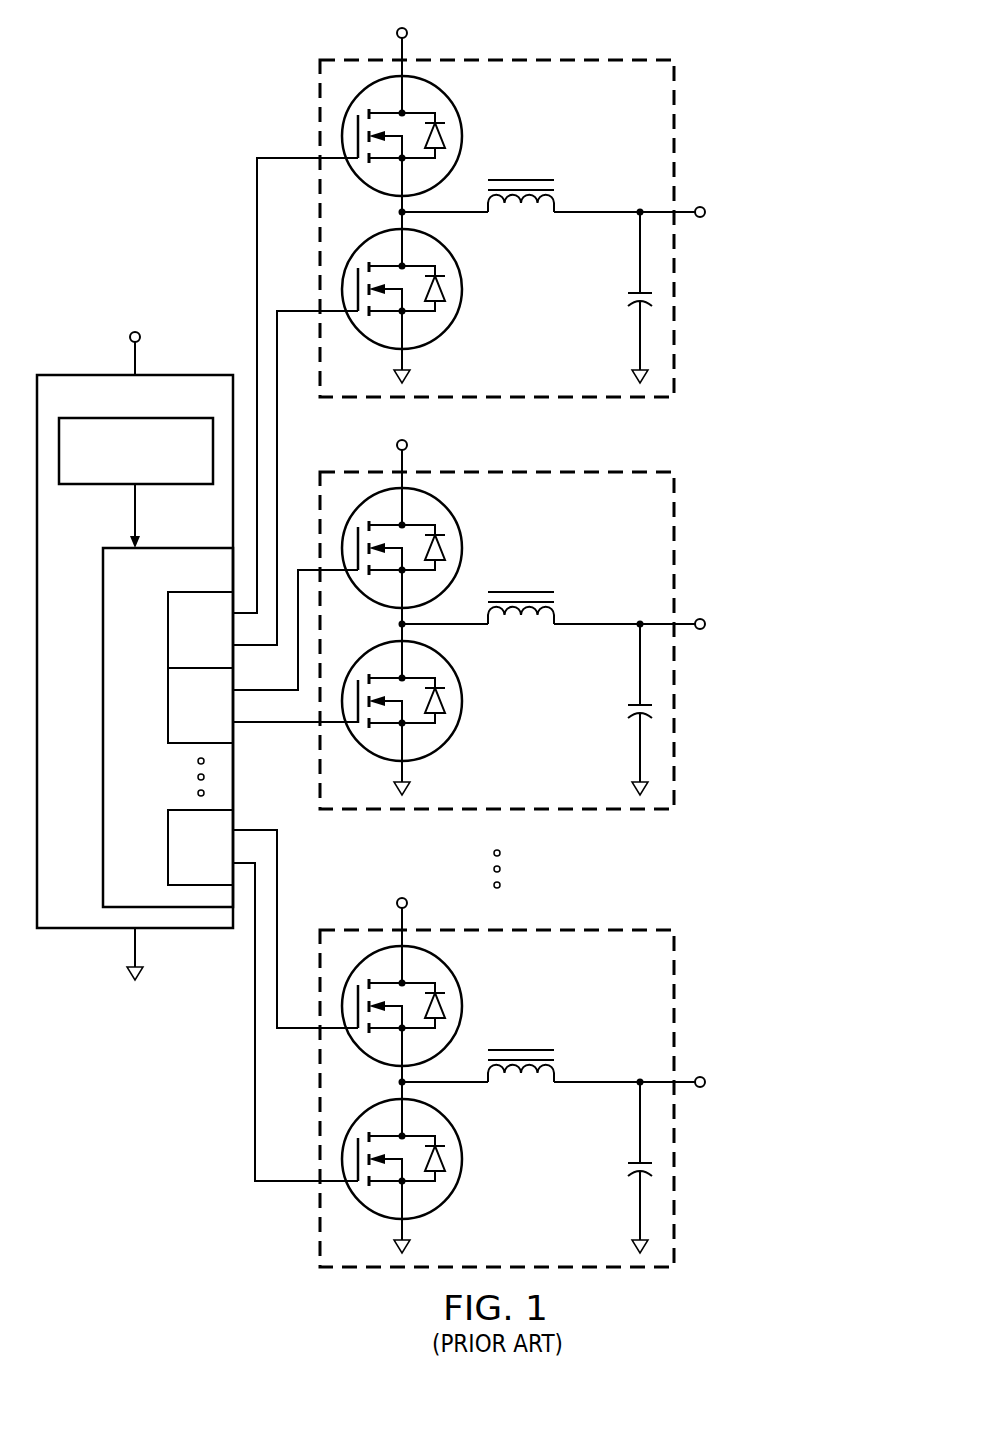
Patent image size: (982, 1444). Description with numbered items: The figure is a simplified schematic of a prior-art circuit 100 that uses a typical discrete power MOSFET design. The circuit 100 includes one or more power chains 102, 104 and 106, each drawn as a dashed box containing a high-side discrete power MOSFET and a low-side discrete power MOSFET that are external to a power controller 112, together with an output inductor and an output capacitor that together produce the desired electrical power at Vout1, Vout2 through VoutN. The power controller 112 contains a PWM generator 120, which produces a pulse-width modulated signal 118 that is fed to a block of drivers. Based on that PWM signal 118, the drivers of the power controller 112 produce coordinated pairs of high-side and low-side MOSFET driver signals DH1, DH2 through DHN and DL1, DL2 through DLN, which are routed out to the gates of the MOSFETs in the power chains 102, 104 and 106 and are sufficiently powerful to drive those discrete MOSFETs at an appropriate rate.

The circuit 100 is at (120, 50).
The power chain 102 is at (541, 199).
The power chain 104 is at (541, 611).
The power chain 106 is at (542, 1069).
The power controller 112 is at (74, 362).
The pulse-width modulated (PWM) signal 118 is at (133, 520).
The PWM generator 120 is at (168, 484).